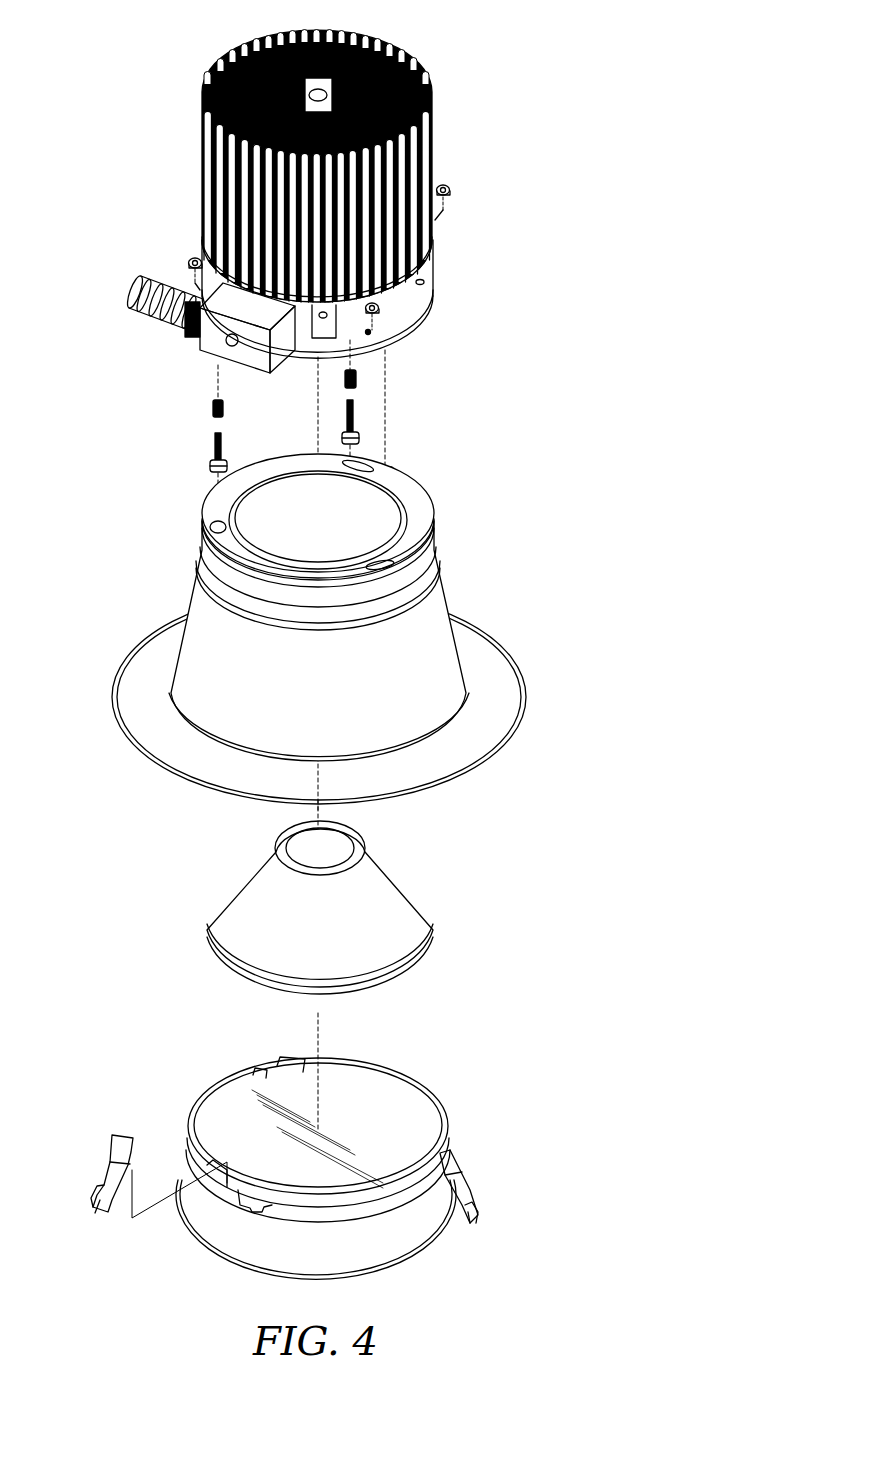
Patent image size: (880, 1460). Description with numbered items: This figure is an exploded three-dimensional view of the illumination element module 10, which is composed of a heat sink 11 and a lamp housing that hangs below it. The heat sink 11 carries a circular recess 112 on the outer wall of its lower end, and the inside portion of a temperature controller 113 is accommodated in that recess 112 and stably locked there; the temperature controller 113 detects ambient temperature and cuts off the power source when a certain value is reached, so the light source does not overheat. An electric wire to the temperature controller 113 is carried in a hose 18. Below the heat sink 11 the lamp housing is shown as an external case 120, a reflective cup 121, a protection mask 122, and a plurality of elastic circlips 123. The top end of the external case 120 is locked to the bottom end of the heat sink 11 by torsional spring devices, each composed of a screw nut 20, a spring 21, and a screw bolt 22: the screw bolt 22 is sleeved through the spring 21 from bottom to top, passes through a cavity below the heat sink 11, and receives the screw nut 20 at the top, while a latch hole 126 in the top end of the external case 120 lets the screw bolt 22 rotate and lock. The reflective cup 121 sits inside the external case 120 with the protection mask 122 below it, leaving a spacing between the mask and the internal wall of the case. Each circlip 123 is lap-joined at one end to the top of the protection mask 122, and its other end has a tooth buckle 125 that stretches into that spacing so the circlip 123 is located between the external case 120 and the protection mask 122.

The illumination element module 10 is at (477, 172).
The heat sink 11 is at (420, 270).
The circular recess 112 is at (383, 307).
The temperature controller 113 is at (215, 335).
The hose 18 is at (167, 300).
The screw nut 20 is at (191, 257).
The spring 21 is at (212, 412).
The screw bolt 22 is at (210, 466).
The external case 120 is at (434, 635).
The reflective cup 121 is at (370, 898).
The protection mask 122 is at (388, 1240).
The circlip 123 is at (115, 1172).
The tooth buckle 125 is at (95, 1202).
The latch hole 126 is at (350, 464).